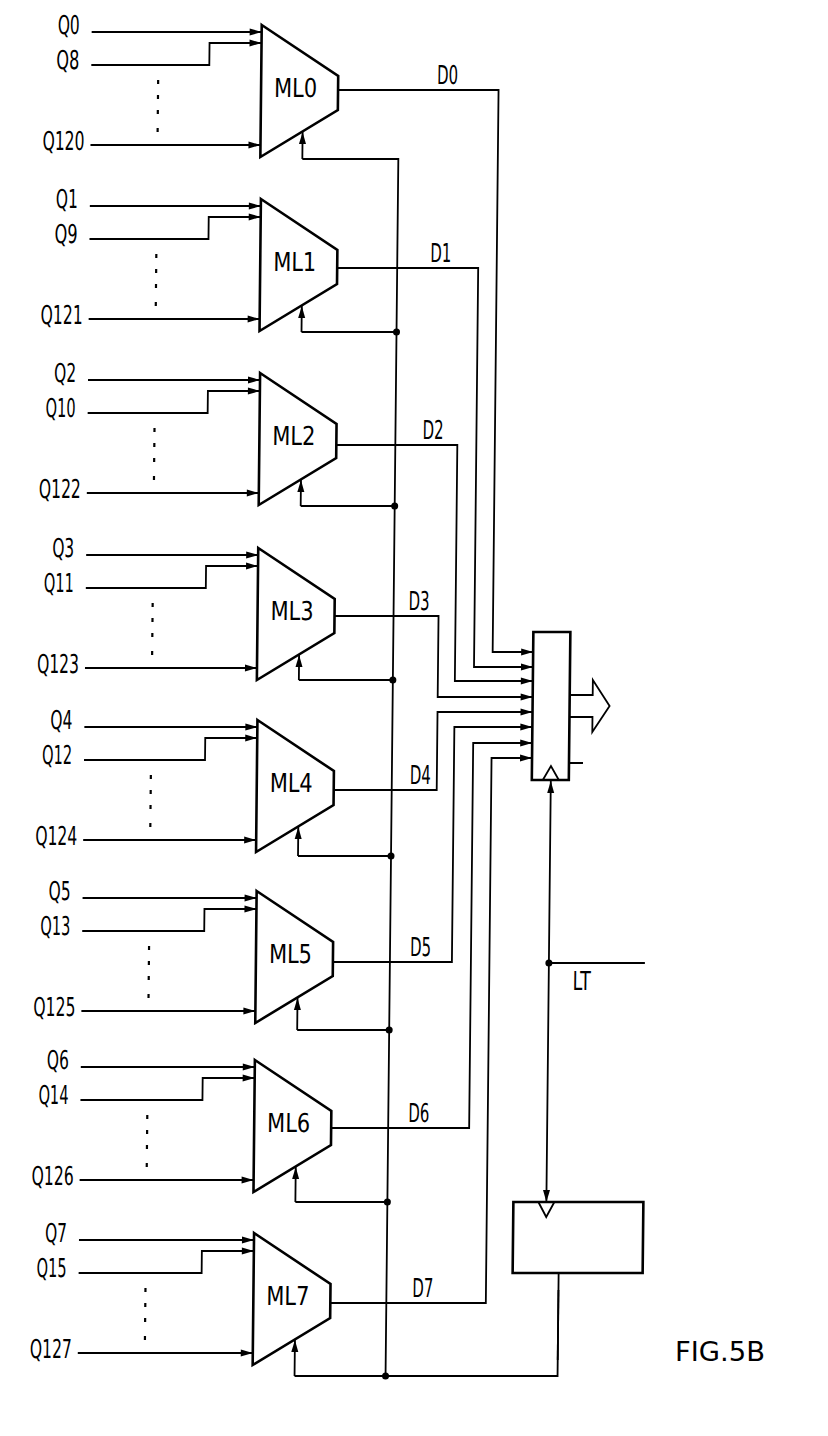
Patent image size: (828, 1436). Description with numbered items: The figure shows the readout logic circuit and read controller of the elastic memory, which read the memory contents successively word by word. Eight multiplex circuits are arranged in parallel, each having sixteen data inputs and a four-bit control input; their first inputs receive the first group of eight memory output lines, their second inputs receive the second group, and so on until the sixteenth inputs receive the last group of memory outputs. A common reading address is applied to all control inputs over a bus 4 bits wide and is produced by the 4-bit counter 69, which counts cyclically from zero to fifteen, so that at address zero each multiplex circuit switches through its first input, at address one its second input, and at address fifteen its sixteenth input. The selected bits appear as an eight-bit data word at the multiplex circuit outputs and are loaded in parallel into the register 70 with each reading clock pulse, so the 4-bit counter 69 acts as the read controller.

The register 70 is at (558, 643).
The 4-bit counter 69 is at (592, 1202).
The 4-bit select bus 4 is at (561, 1329).